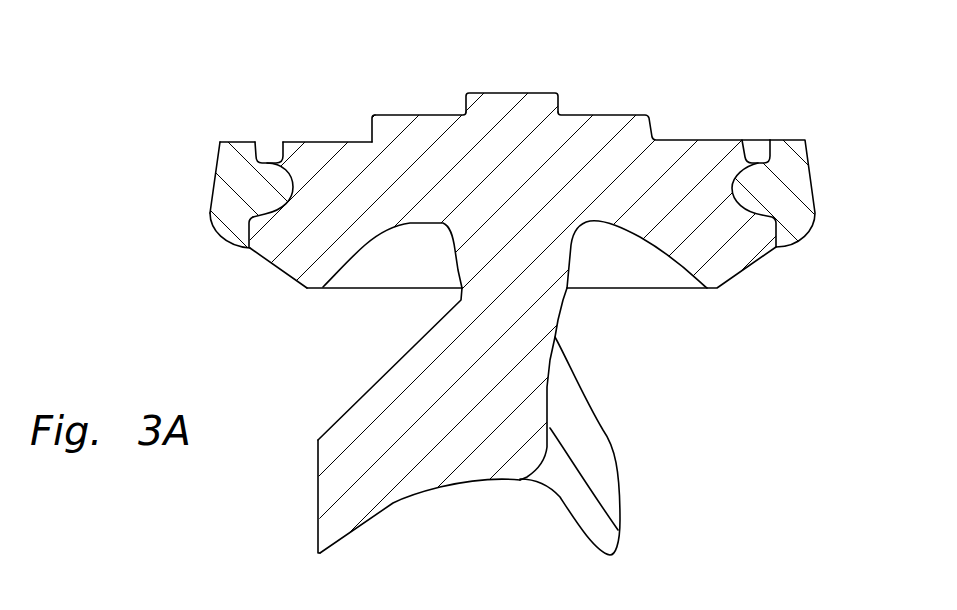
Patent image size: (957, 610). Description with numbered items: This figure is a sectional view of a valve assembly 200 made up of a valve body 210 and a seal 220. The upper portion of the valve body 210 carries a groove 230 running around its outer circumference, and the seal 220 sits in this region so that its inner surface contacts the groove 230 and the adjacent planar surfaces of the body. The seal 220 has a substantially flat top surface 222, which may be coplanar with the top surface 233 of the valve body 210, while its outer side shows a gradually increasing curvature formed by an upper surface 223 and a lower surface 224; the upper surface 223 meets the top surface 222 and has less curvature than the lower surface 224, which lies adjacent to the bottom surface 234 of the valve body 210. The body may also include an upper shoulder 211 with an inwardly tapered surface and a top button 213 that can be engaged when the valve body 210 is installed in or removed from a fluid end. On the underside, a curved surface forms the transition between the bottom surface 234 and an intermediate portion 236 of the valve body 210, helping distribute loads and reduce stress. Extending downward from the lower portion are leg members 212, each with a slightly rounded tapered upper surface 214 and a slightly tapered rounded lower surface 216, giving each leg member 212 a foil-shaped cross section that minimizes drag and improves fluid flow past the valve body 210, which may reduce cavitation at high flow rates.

The tire sensor mounting assembly 200 is at (150, 62).
The valve body 210 is at (633, 114).
The upper shoulder 211 is at (368, 126).
The leg member 212 is at (318, 490).
The top button 213 is at (524, 92).
The tapered upper surface 214 is at (383, 380).
The rounded lower surface 216 is at (457, 484).
The seal 220 is at (808, 153).
The top surface 222 is at (241, 141).
The upper surface 223 is at (216, 157).
The lower surface 224 is at (216, 241).
The groove 230 is at (742, 139).
The top surface 233 is at (318, 141).
The bottom surface 234 is at (285, 273).
The intermediate portion 236 is at (455, 268).